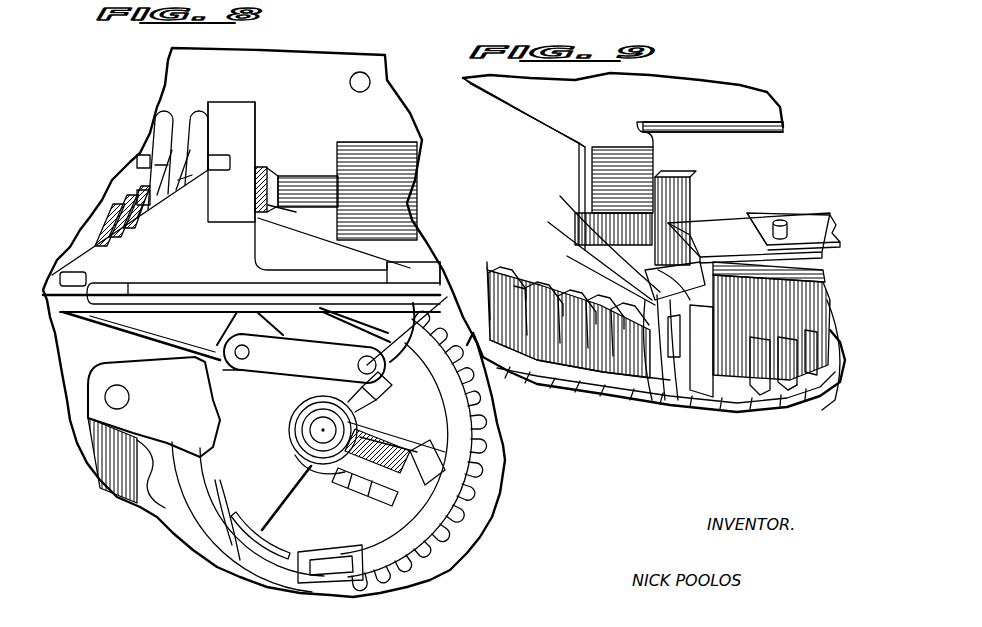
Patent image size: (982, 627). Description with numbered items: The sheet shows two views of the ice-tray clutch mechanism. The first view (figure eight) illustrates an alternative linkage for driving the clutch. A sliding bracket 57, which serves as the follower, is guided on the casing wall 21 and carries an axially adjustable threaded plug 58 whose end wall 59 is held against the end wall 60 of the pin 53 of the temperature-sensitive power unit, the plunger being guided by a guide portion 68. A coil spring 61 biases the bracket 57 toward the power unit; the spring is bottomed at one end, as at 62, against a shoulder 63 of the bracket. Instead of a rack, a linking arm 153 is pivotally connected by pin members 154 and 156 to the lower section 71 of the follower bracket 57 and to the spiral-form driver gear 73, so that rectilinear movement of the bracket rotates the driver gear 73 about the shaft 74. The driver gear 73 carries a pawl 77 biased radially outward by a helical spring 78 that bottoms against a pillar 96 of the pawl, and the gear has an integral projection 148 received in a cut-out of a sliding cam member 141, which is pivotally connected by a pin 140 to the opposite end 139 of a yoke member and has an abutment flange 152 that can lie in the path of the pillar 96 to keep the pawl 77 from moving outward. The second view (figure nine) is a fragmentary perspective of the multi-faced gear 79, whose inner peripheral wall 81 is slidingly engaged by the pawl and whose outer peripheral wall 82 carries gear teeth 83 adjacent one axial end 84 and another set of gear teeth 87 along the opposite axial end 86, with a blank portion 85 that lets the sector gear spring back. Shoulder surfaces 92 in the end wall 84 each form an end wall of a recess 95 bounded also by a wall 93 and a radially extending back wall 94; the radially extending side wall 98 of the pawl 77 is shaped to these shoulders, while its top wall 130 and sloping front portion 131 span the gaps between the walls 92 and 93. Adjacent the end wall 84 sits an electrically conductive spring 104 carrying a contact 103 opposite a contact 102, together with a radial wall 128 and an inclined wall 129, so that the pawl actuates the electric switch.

In FIG. 8, the casing wall 21 is at (160, 516).
In FIG. 9, the casing wall 21 is at (635, 392).
In FIG. 8, the plunger 53 is at (320, 177).
In FIG. 8, the sliding bracket 57 is at (118, 242).
In FIG. 8, the threaded plug 58 is at (262, 168).
In FIG. 8, the end wall of plug 59 is at (280, 200).
In FIG. 8, the end wall of pin 60 is at (283, 172).
In FIG. 8, the coil spring 61 is at (158, 143).
In FIG. 8, the spring end 62 is at (200, 110).
In FIG. 8, the shoulder 63 is at (204, 173).
In FIG. 8, the guide portion 68 is at (412, 143).
In FIG. 8, the lower portion of bracket 71 is at (137, 320).
In FIG. 8, the drive gear 73 is at (375, 413).
In FIG. 8, the shaft 74 is at (318, 432).
In FIG. 8, the pawl member 77 is at (425, 470).
In FIG. 9, the pawl member 77 is at (558, 222).
In FIG. 8, the helical spring 78 is at (355, 462).
In FIG. 8, the multi-faced gear 79 is at (203, 513).
In FIG. 9, the multi-faced gear 79 is at (452, 0).
In FIG. 8, the peripheral wall 81 is at (245, 508).
In FIG. 9, the outer peripheral wall 82 is at (490, 0).
In FIG. 9, the gear teeth 83 is at (590, 350).
In FIG. 8, the axial end wall 84 is at (397, 558).
In FIG. 9, the blank portion 85 is at (838, 370).
In FIG. 9, the axial end 86 is at (603, 390).
In FIG. 9, the gear teeth 87 is at (795, 382).
In FIG. 8, the shoulder surface 92 is at (293, 565).
In FIG. 9, the shoulder surface 92 is at (668, 320).
In FIG. 9, the recess wall 93 is at (702, 257).
In FIG. 9, the back wall 94 is at (668, 330).
In FIG. 9, the recess 95 is at (652, 315).
In FIG. 8, the pillar 96 is at (404, 459).
In FIG. 9, the pillar 96 is at (673, 176).
In FIG. 8, the side wall of pawl 98 is at (425, 438).
In FIG. 9, the electric contact 102 is at (782, 223).
In FIG. 9, the electric contact 103 is at (805, 225).
In FIG. 9, the electrically conductive spring 104 is at (740, 235).
In FIG. 9, the radial wall 128 is at (707, 253).
In FIG. 9, the inclined wall 129 is at (635, 197).
In FIG. 9, the top wall of pawl 130 is at (600, 268).
In FIG. 9, the front portion 131 is at (620, 285).
In FIG. 8, the end of yoke member 139 is at (90, 447).
In FIG. 8, the pin 140 is at (105, 397).
In FIG. 8, the sliding cam member 141 is at (143, 418).
In FIG. 9, the sliding cam member 141 is at (528, 96).
In FIG. 8, the projection 148 is at (448, 280).
In FIG. 9, the abutment flange 152 is at (587, 188).
In FIG. 8, the linking arm 153 is at (278, 365).
In FIG. 8, the pin member 154 is at (250, 352).
In FIG. 8, the pin member 156 is at (367, 365).